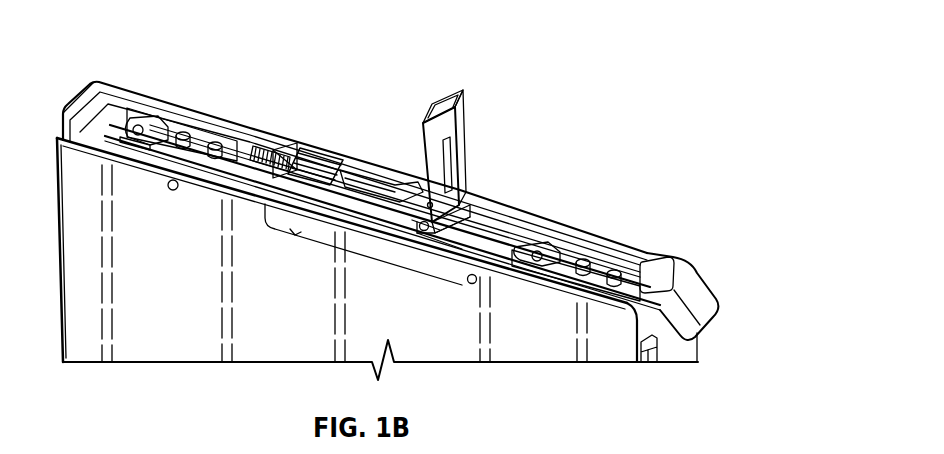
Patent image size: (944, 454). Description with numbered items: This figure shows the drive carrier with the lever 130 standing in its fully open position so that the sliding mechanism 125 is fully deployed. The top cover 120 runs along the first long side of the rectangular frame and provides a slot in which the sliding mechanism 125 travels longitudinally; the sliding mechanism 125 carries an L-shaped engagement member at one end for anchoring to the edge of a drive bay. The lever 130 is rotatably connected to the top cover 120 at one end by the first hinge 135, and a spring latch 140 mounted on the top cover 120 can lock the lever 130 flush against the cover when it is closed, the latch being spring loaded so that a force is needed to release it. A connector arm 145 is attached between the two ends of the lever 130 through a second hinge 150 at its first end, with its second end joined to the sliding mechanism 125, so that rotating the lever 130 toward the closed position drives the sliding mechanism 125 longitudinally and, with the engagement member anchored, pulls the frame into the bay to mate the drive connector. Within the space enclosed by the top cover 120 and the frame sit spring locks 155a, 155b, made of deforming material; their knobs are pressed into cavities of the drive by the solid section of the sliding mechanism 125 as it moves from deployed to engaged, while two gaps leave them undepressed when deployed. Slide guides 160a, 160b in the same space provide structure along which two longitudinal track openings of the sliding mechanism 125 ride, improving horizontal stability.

The top cover 120 is at (98, 86).
The sliding mechanism 125 is at (700, 293).
The lever 130 is at (445, 100).
The first hinge 135 is at (438, 257).
The spring latch 140 is at (315, 162).
The connector arm 145 is at (373, 190).
The second hinge 150 is at (420, 227).
The spring lock 155a is at (532, 247).
The spring lock 155b is at (130, 127).
The slide guide 160a is at (597, 272).
The slide guide 160b is at (200, 147).